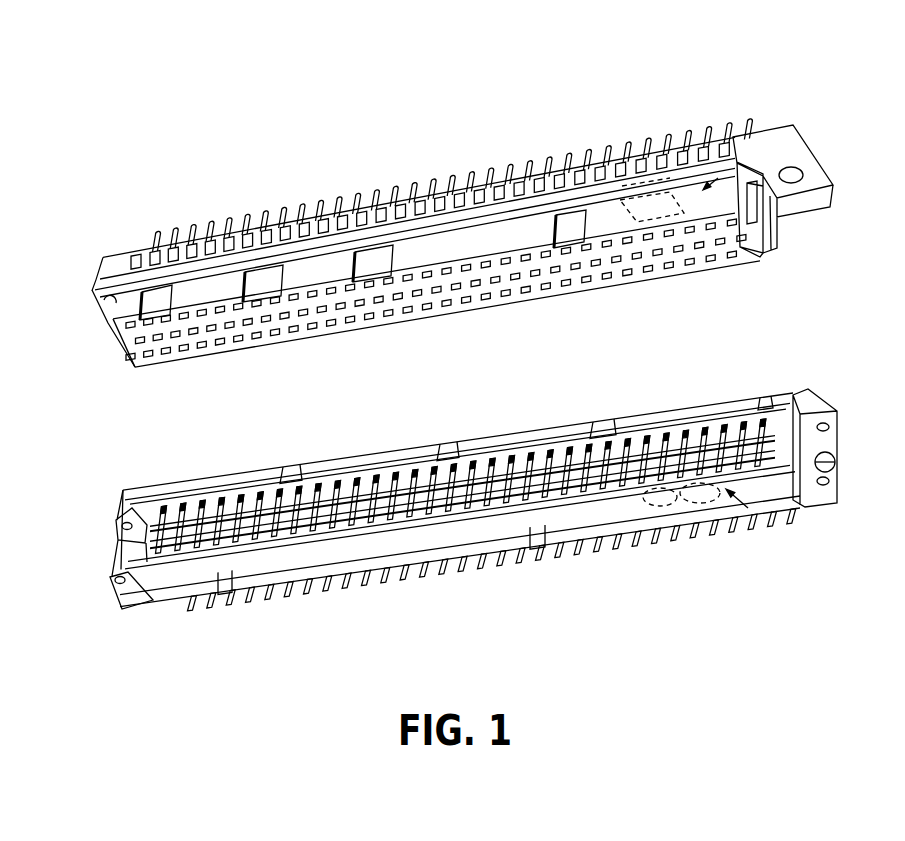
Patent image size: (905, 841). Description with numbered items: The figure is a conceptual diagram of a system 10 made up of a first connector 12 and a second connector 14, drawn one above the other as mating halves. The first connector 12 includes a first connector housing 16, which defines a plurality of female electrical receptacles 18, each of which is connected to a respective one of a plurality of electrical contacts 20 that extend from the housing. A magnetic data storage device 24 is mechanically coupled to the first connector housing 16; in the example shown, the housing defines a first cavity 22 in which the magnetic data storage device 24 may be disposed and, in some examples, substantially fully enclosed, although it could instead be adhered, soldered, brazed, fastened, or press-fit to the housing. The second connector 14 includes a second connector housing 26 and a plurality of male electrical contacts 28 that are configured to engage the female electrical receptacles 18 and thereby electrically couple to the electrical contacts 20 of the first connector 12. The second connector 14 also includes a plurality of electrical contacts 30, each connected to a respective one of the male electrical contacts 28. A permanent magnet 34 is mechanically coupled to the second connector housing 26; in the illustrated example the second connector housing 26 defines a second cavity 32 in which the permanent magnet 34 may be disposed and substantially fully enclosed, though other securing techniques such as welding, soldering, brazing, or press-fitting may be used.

The system 10 is at (207, 83).
The first connector 12 is at (104, 243).
The second connector 14 is at (123, 622).
The first connector housing 16 is at (128, 312).
The female electrical receptacles 18 is at (167, 358).
The electrical contacts 20 is at (360, 203).
The first cavity 22 is at (718, 178).
The magnetic data storage device 24 is at (621, 188).
The second connector housing 26 is at (122, 597).
The male electrical contacts 28 is at (392, 478).
The electrical contacts 30 is at (450, 576).
The second cavity 32 is at (748, 508).
The permanent magnet 34 is at (668, 512).